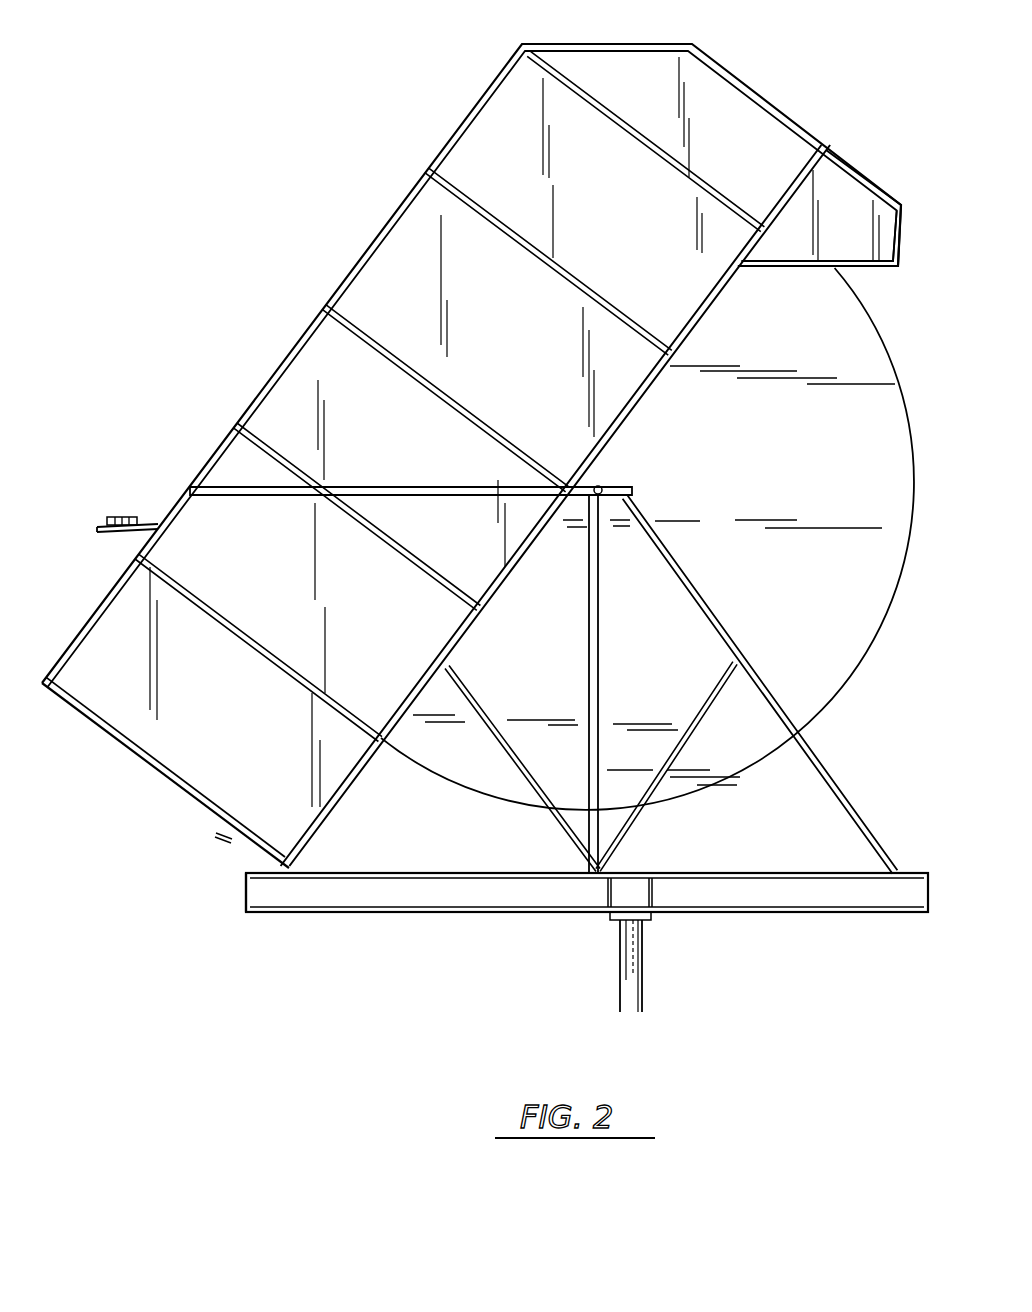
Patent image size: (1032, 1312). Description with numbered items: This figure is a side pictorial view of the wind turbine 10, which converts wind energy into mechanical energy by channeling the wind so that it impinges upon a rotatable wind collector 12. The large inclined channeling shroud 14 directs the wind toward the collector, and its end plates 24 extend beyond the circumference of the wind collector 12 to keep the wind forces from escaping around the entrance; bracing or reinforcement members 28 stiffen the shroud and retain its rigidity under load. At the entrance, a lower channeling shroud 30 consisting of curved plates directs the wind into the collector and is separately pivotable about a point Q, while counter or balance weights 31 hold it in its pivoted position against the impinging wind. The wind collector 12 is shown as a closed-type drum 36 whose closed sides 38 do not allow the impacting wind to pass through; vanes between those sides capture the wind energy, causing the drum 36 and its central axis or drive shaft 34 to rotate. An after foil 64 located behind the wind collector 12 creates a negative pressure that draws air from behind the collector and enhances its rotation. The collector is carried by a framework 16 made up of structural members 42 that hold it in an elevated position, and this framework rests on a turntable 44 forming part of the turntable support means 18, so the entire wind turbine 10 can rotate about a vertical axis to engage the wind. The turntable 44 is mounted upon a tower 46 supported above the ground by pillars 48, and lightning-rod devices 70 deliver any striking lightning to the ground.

The wind turbine 10 is at (284, 297).
The wind collector 12 is at (893, 344).
The channeling shroud 14 is at (368, 248).
The framework 16 is at (724, 632).
The turntable support means 18 is at (403, 912).
The end plates 24 is at (630, 413).
The bracing or reinforcement members 28 is at (598, 302).
The lower channeling shroud 30 is at (131, 531).
The counter or balance weights 31 is at (120, 517).
The central axis or drive shaft 34 is at (606, 489).
The drum 36 is at (850, 371).
The closed sides 38 is at (855, 616).
The structural members 42 is at (586, 698).
The turntable 44 is at (345, 872).
The tower 46 is at (236, 876).
The pillars 48 is at (620, 985).
The after foil 64 is at (876, 186).
The lightning-rod devices 70 is at (641, 968).
The point Q is at (153, 503).